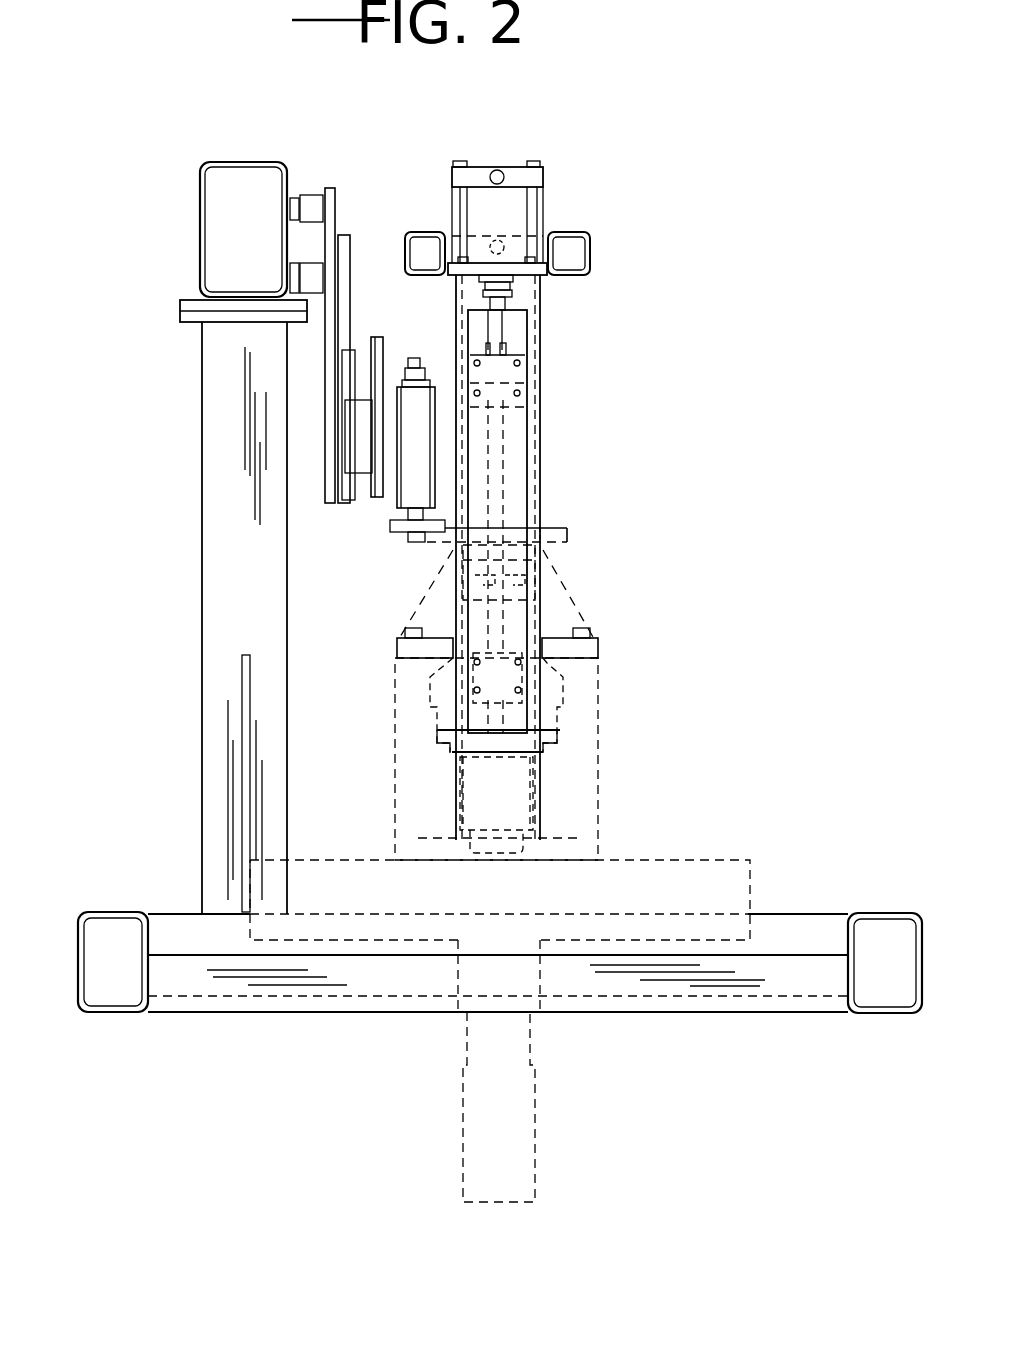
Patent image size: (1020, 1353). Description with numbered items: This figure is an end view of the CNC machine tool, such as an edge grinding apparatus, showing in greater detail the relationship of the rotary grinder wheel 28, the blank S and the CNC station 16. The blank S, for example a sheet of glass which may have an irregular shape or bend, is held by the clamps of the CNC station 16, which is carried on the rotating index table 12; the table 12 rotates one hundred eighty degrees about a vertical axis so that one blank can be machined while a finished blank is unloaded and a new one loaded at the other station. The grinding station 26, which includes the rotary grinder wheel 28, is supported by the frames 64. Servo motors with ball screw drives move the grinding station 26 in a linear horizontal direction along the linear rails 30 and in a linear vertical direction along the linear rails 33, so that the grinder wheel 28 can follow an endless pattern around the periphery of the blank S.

The rotating index table 12 is at (673, 873).
The CNC station 16 is at (577, 690).
The grinding station 26 is at (362, 383).
The rotary grinder wheel 28 is at (393, 527).
The linear rails 30 is at (294, 272).
The linear rails 33 is at (344, 262).
The frames 64 is at (200, 238).
The blank S is at (567, 533).